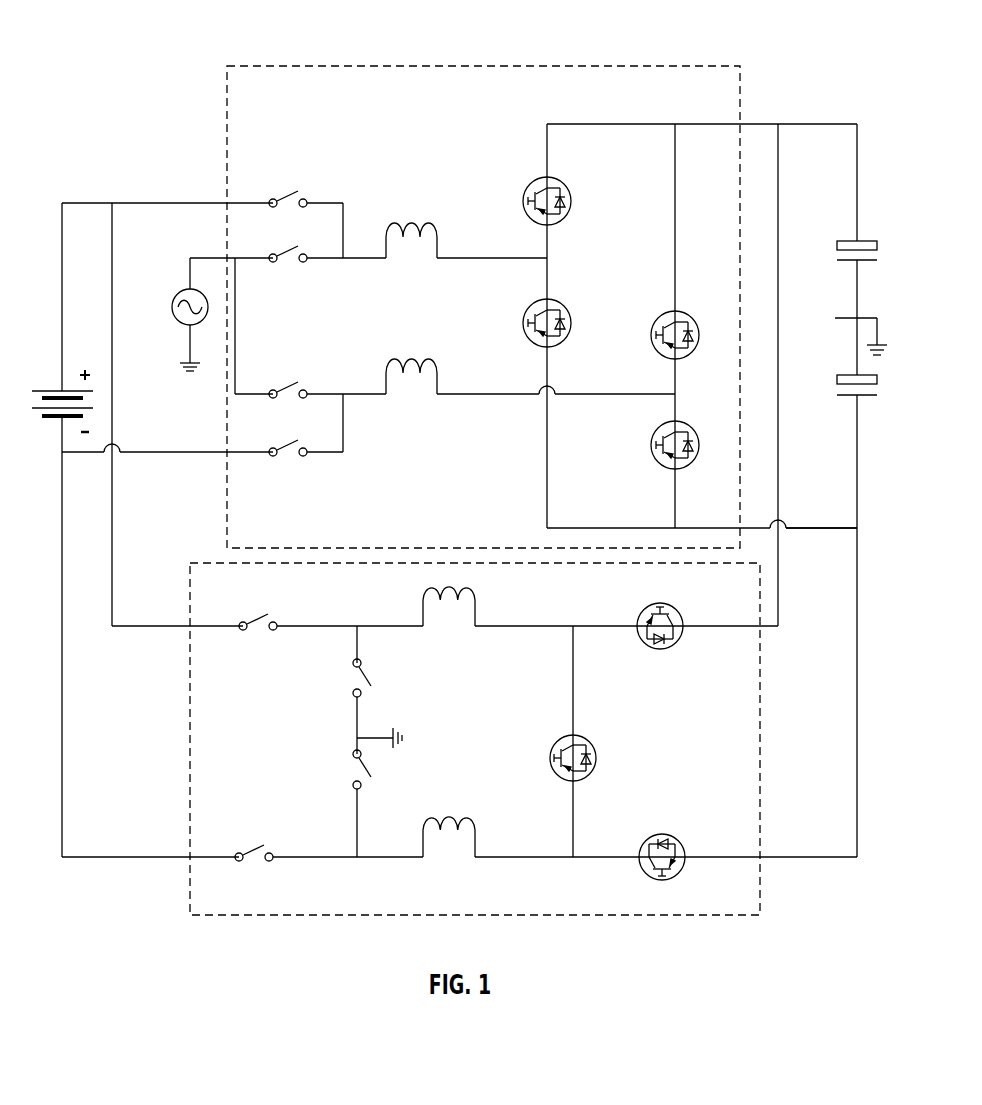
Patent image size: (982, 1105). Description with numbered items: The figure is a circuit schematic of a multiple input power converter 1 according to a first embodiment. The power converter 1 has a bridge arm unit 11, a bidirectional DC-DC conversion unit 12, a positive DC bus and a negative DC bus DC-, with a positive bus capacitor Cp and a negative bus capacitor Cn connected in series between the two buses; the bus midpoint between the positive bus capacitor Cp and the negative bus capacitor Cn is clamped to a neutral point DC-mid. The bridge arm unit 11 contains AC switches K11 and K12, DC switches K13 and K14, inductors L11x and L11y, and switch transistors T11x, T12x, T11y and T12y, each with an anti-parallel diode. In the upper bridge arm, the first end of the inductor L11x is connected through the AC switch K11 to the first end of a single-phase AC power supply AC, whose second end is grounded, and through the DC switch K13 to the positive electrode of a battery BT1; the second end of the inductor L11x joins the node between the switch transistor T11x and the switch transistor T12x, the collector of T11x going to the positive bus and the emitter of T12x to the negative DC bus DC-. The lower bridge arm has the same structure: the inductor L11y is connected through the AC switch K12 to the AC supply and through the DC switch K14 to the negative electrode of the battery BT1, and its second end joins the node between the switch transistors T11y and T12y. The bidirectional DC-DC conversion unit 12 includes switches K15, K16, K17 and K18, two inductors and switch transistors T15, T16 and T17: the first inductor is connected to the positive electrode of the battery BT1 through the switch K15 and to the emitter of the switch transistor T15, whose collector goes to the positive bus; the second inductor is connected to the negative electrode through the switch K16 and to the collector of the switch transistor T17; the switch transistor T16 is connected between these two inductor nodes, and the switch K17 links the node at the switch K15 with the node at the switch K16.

The power converter 1 is at (110, 64).
The bridge arm unit 11 is at (227, 137).
The bidirectional DC-DC conversion unit 12 is at (760, 882).
The battery BT1 is at (46, 401).
The single-phase AC power supply AC is at (176, 314).
The AC switch K11 is at (292, 272).
The AC switch K12 is at (290, 406).
The DC switch K13 is at (292, 217).
The DC switch K14 is at (290, 465).
The switch K15 is at (258, 637).
The switch K16 is at (254, 868).
The switch K17 is at (340, 678).
The switch K18 is at (340, 769).
The inductor L11x is at (411, 222).
The inductor L11y is at (411, 358).
The switch transistor T11x is at (530, 185).
The switch transistor T12x is at (530, 307).
The switch transistor T11y is at (657, 316).
The switch transistor T12y is at (656, 458).
The switch transistor T15 is at (660, 644).
The switch transistor T16 is at (592, 758).
The switch transistor T17 is at (662, 840).
The positive bus capacitor Cp is at (846, 221).
The negative bus capacitor Cn is at (846, 587).
The negative DC bus DC- is at (821, 515).
The neutral point DC-mid is at (881, 320).